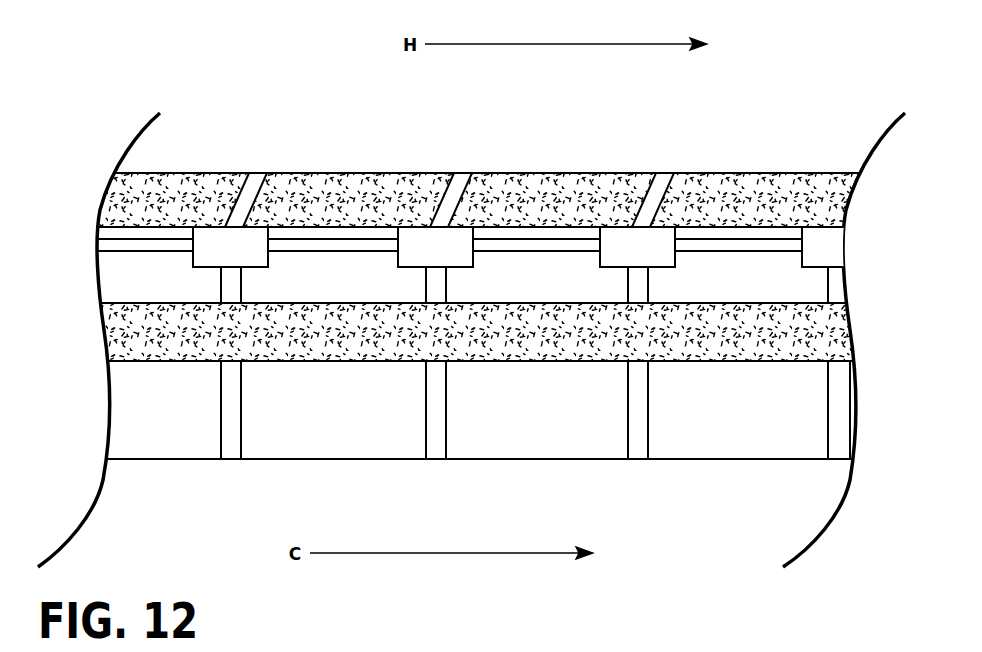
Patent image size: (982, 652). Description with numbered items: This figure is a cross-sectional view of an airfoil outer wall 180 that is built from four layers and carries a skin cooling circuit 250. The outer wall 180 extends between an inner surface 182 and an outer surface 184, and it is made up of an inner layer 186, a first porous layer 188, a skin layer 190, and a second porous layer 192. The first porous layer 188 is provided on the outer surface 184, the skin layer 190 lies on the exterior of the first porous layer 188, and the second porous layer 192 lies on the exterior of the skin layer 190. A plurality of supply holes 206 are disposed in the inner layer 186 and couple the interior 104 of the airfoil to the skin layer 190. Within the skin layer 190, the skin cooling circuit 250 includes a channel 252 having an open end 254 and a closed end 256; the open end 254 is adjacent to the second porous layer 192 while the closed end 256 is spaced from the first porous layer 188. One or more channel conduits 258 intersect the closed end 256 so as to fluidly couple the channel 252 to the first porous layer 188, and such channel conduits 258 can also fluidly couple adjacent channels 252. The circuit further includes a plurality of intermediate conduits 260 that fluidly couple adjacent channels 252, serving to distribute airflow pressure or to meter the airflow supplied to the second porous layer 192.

The interior 104 is at (427, 616).
The outer wall 180 is at (298, 92).
The inner surface 182 is at (205, 460).
The outer surface 184 is at (145, 362).
The inner layer 186 is at (859, 396).
The first porous layer 188 is at (857, 326).
The skin layer 190 is at (847, 264).
The second porous layer 192 is at (854, 196).
The supply holes 206 is at (243, 417).
The skin cooling circuit 250 is at (90, 265).
The channel 252 is at (265, 218).
The open end 254 is at (260, 222).
The closed end 256 is at (255, 268).
The channel conduits 258 is at (242, 190).
The intermediate conduits 260 is at (375, 239).